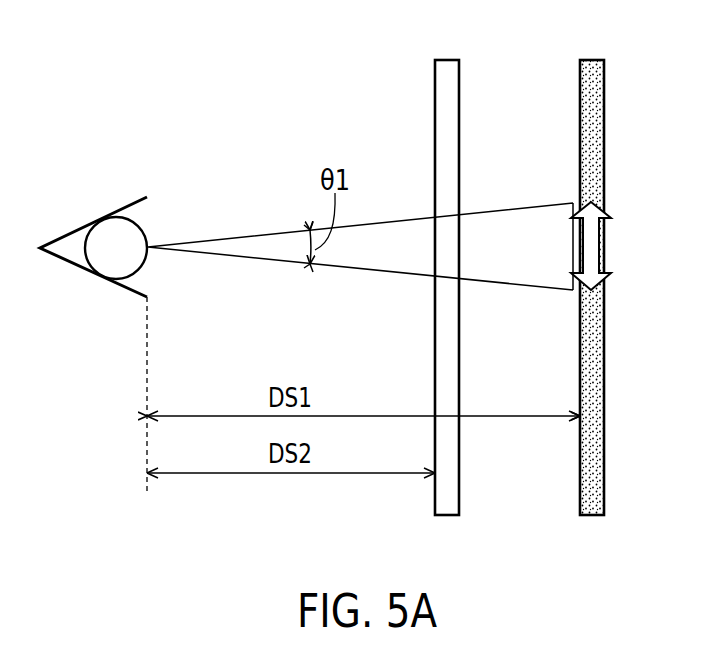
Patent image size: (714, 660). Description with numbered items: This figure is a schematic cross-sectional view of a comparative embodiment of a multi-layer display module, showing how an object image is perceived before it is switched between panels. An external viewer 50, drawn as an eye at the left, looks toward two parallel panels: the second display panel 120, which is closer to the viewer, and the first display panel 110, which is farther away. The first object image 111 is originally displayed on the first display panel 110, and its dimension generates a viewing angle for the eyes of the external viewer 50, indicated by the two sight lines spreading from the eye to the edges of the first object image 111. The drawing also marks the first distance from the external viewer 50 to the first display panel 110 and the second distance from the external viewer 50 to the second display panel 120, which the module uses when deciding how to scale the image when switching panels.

The external viewer 50 is at (112, 233).
The first display panel 110 is at (595, 83).
The first object image 111 is at (600, 247).
The second display panel 120 is at (448, 83).